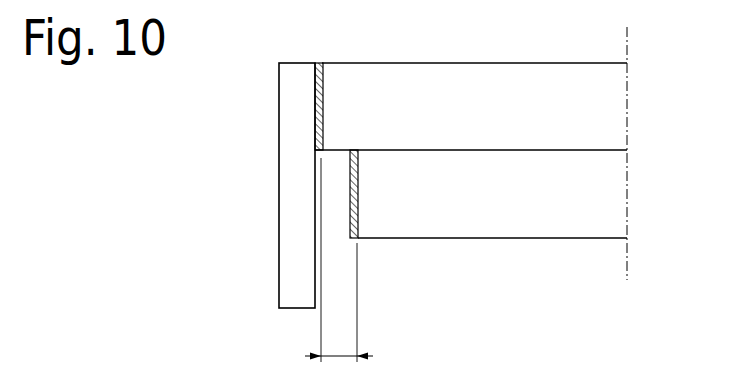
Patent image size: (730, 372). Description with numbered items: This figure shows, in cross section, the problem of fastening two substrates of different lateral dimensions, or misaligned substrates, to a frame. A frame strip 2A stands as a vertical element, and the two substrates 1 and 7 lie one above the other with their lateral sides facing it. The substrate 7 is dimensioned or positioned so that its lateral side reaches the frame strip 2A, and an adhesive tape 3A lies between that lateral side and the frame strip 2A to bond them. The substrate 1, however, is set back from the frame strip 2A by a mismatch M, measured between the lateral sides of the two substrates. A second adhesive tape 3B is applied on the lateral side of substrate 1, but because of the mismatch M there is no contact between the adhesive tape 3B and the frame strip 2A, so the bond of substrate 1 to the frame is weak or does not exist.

The substrate 1 is at (588, 202).
The substrate 7 is at (590, 103).
The frame strip 2A is at (279, 148).
The adhesive tape 3A is at (317, 63).
The adhesive tape 3B is at (350, 238).
The mismatch M is at (339, 260).